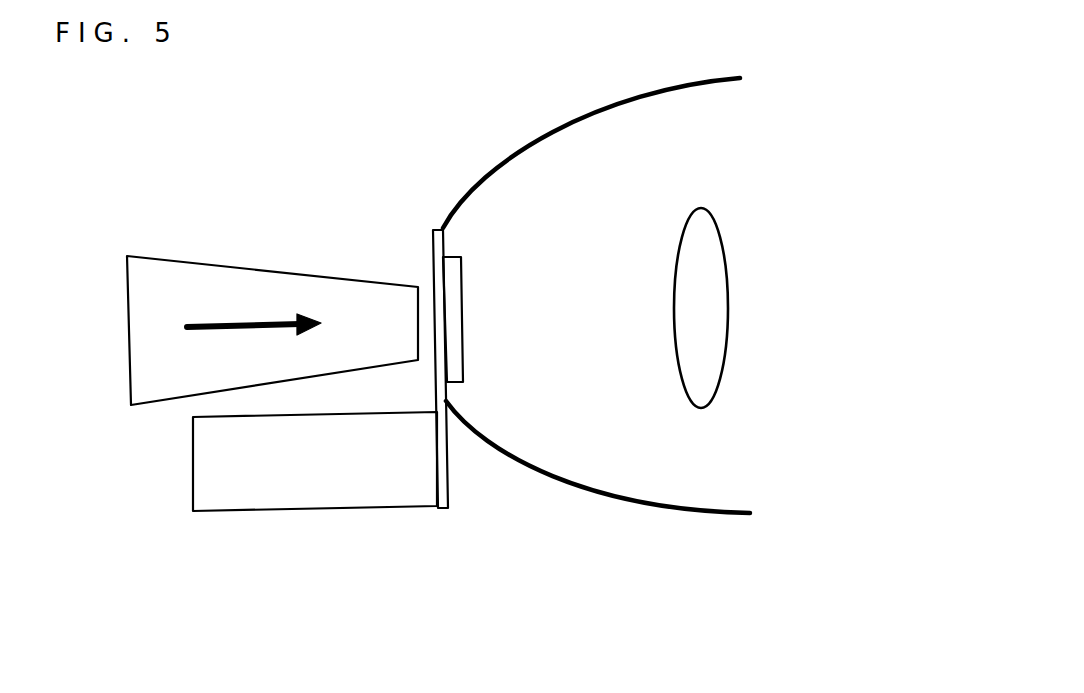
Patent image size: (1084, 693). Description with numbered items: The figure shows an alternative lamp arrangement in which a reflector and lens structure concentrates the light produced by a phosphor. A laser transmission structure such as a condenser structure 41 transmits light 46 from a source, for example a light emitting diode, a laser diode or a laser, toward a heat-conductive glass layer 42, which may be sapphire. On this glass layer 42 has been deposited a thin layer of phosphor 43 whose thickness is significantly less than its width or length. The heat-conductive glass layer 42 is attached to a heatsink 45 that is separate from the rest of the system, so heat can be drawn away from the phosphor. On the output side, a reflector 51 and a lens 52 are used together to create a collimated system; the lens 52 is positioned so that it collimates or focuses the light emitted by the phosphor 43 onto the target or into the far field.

The condenser structure 41 is at (217, 264).
The heat-conductive glass layer 42 is at (433, 240).
The thin layer of phosphor 43 is at (460, 337).
The heatsink 45 is at (273, 497).
The light 46 is at (183, 327).
The reflector 51 is at (732, 511).
The lens 52 is at (717, 222).